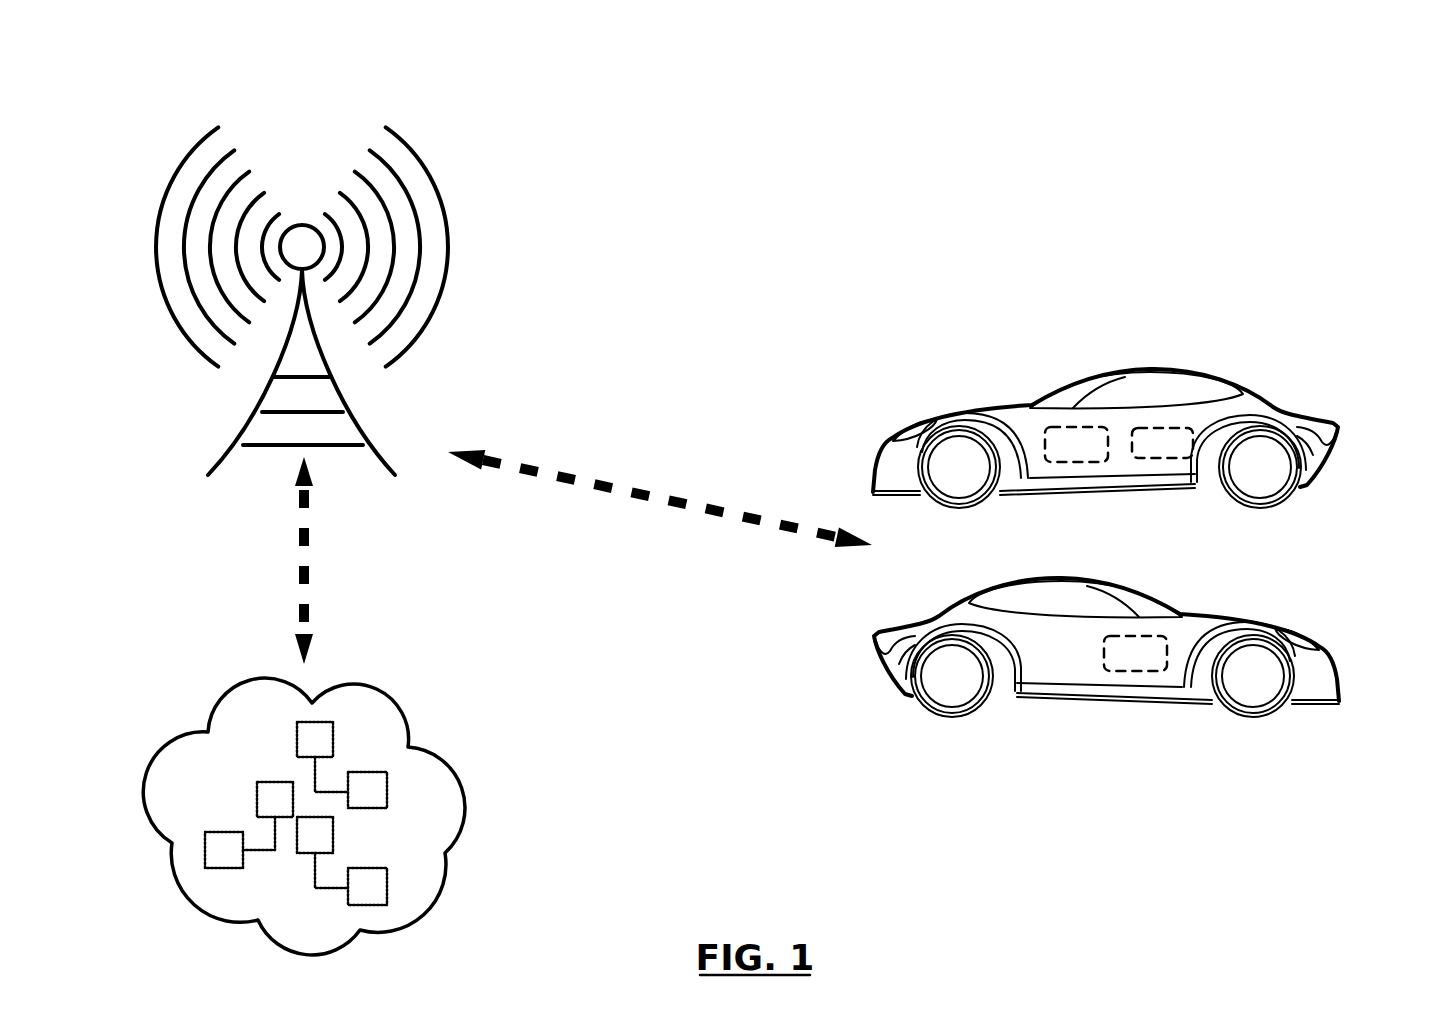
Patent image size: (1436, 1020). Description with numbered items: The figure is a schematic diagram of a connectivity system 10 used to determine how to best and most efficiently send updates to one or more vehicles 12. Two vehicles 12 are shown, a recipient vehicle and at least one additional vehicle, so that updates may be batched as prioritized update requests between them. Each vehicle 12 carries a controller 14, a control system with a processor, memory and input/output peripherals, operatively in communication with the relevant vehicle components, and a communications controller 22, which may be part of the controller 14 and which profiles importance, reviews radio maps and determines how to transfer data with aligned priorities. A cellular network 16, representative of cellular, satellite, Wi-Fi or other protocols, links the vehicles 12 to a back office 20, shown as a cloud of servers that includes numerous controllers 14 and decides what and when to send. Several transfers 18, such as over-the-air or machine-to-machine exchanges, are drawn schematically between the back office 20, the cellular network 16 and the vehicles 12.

The connectivity system 10 is at (1353, 137).
The vehicle 12 is at (973, 387).
The controller 14 is at (1075, 427).
The cellular network 16 is at (463, 180).
The transfers 18 is at (302, 575).
The back office 20 is at (175, 718).
The communications controller 22 is at (1162, 460).